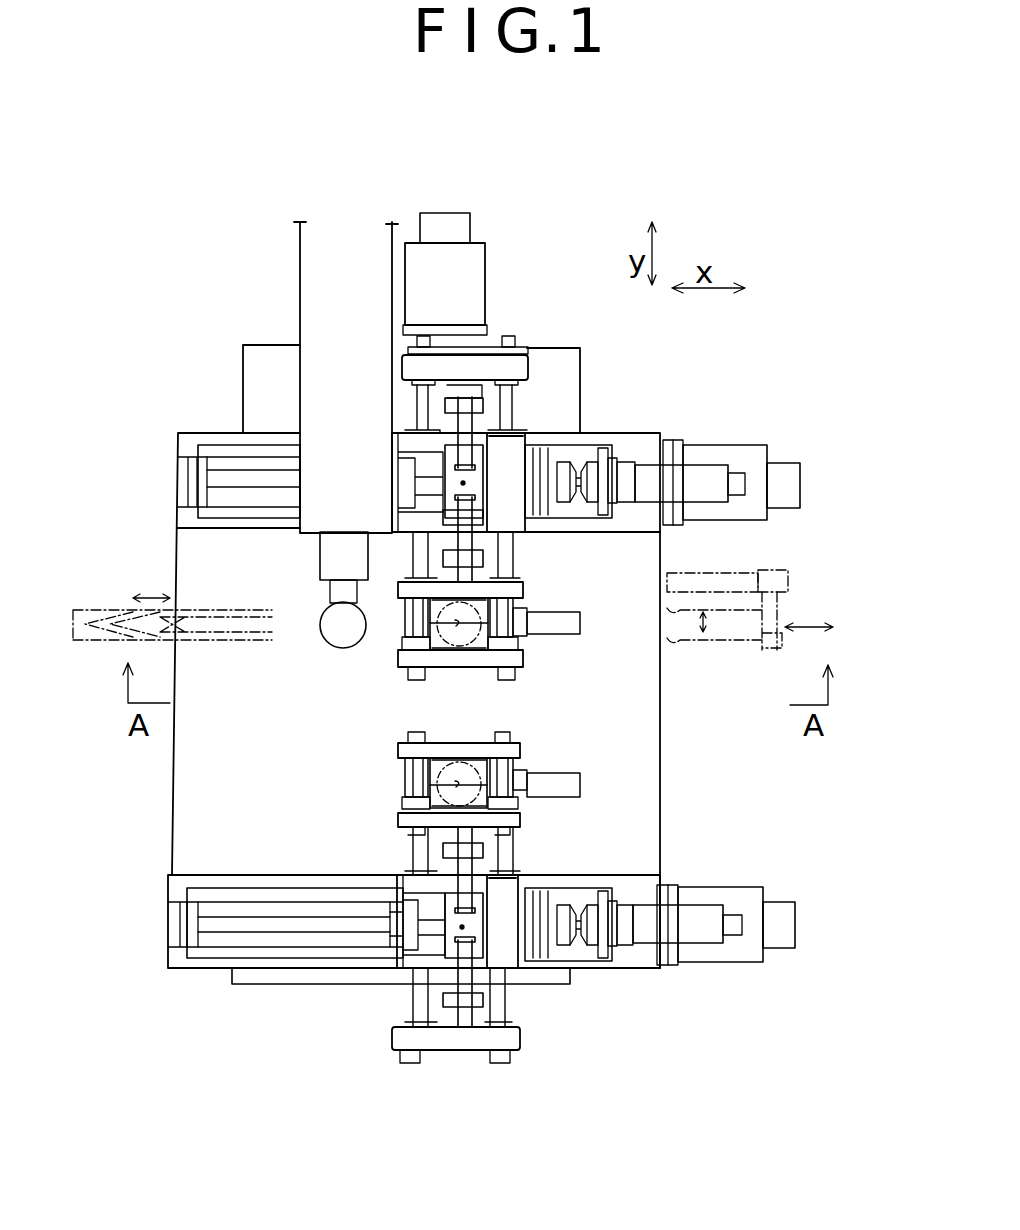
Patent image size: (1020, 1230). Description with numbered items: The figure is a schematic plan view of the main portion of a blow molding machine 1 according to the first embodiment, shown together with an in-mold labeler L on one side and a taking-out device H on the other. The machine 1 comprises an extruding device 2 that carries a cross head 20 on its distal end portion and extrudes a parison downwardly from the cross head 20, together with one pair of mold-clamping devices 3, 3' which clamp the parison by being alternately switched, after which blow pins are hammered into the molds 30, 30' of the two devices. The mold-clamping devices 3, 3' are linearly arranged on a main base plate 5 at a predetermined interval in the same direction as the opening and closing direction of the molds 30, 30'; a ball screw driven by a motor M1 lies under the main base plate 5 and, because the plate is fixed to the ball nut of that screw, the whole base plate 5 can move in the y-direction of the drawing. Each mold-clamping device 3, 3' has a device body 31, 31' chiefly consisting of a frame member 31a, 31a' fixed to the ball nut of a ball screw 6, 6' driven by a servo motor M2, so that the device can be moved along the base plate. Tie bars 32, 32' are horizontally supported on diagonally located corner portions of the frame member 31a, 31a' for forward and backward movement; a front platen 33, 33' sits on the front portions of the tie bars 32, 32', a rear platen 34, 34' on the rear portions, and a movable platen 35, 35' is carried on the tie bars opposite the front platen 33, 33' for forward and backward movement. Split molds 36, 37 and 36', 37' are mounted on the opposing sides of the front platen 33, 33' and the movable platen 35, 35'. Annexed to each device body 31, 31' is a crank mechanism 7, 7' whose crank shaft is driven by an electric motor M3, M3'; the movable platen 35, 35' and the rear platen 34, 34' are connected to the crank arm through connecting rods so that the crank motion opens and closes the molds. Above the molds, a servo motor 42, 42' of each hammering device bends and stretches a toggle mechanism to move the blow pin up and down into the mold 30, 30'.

The blow molding machine 1 is at (586, 284).
The extruding device 2 is at (320, 282).
The mold-clamping device 3 is at (565, 449).
The mold-clamping device 3' is at (608, 891).
The main base plate 5 is at (663, 752).
The ball screw 6 is at (239, 523).
The ball screw 6' is at (285, 895).
The crank mechanism 7 is at (513, 518).
The crank mechanism 7' is at (508, 888).
The cross head 20 is at (337, 625).
The mold 30 is at (390, 661).
The mold 30' is at (399, 787).
The device body 31 is at (611, 428).
The device body 31' is at (562, 960).
The frame member 31a is at (572, 382).
The frame member 31a' is at (540, 975).
The tie bars 32 is at (466, 552).
The tie bars 32' is at (478, 855).
The front platen 33 is at (508, 669).
The front platen 33' is at (499, 742).
The rear platen 34 is at (487, 344).
The rear platen 34' is at (414, 1031).
The movable platen 35 is at (511, 600).
The movable platen 35' is at (422, 843).
The split mold 36 is at (400, 663).
The split mold 36' is at (407, 781).
The split mold 37 is at (401, 643).
The split mold 37' is at (407, 791).
The servo motor 42 is at (578, 630).
The servo motor 42' is at (580, 798).
The motor M1 is at (485, 263).
The servo motor M2 is at (757, 445).
The electric motor M3 is at (700, 520).
The electric motor M3' is at (689, 959).
The in-mold labeler L is at (130, 602).
The taking-out device H is at (788, 566).